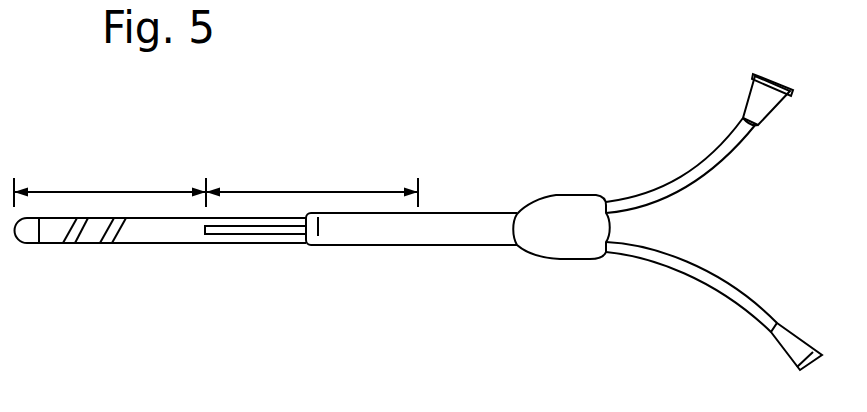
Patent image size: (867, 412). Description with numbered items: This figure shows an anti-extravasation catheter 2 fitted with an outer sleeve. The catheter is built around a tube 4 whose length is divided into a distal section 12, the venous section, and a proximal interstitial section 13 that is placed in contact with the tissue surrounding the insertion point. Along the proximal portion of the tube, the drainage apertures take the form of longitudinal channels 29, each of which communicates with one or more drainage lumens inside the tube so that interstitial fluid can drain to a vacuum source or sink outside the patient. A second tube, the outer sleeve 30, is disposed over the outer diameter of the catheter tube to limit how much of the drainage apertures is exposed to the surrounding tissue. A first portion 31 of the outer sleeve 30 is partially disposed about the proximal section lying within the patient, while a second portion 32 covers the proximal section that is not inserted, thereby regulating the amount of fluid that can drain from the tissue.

The catheter 2 is at (452, 103).
The tube 4 is at (152, 243).
The distal section 12 is at (96, 192).
The proximal interstitial section 13 is at (295, 192).
The longitudinal channels 29 is at (245, 229).
The outer sleeve 30 is at (472, 213).
The first portion 31 is at (348, 257).
The second portion 32 is at (468, 262).